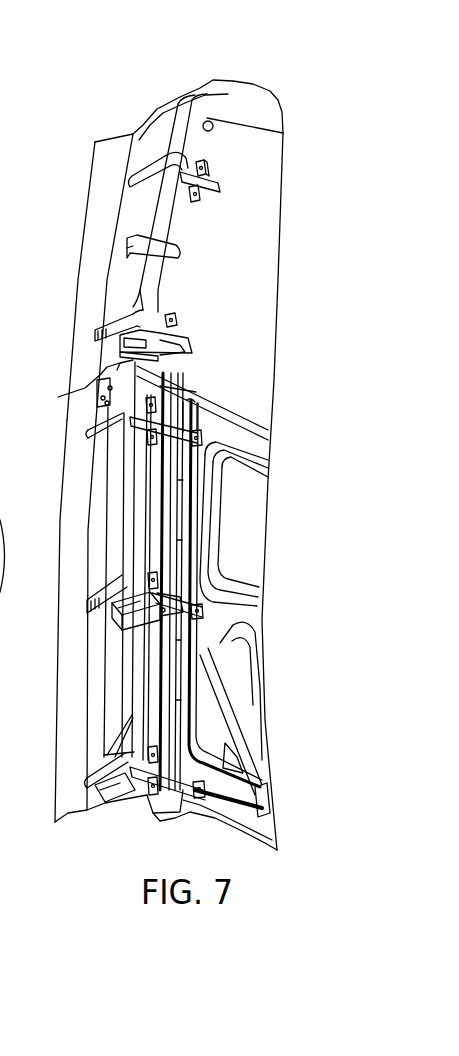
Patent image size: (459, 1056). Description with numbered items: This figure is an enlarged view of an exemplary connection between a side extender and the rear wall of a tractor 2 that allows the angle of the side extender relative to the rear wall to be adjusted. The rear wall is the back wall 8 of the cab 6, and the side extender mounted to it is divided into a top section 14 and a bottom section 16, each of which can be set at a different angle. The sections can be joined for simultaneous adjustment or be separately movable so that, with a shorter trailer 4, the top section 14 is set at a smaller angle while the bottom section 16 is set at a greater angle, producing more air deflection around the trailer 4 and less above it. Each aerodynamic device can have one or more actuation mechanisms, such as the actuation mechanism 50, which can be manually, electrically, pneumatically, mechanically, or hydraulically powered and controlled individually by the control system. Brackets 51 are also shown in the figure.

The tractor 2 is at (51, 360).
The trailer 4 is at (0, 159).
The cab 6 is at (165, 81).
The back wall 8 is at (262, 212).
The top section 14 is at (96, 267).
The bottom section 16 is at (73, 468).
The actuation mechanism 50 is at (196, 348).
The hinge bracket 51 is at (202, 190).